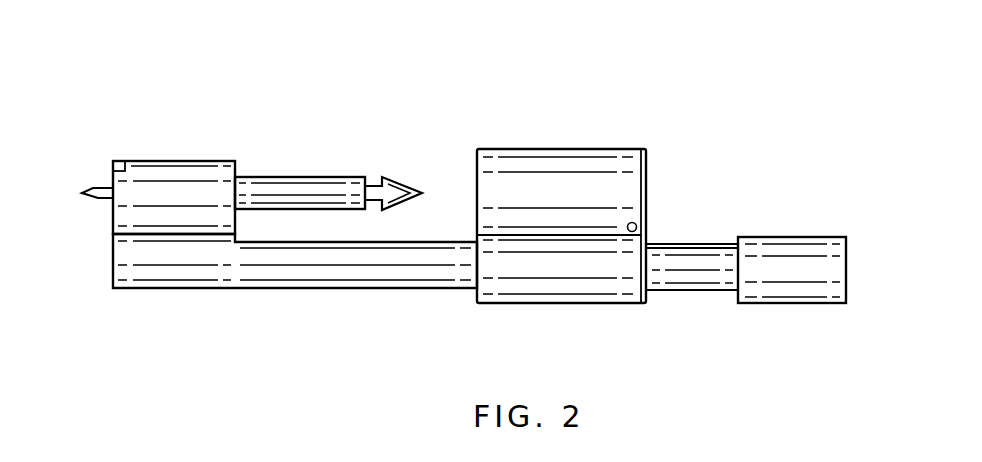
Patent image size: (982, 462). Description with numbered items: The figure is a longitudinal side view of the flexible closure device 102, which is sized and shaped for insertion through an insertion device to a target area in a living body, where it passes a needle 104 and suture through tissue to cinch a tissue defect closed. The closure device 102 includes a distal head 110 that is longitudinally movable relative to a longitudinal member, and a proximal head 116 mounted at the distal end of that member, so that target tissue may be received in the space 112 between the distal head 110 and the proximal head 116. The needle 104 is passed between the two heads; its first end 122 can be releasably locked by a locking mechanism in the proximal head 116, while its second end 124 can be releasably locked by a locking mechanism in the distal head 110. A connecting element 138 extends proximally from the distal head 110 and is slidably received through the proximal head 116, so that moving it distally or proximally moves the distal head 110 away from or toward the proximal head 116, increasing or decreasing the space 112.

The flexible closure device 102 is at (325, 133).
The needle 104 is at (280, 177).
The distal head 110 is at (188, 173).
The space 112 is at (439, 197).
The proximal head 116 is at (555, 162).
The first end of the needle 122 is at (395, 182).
The second end of the needle 124 is at (95, 187).
The connecting element 138 is at (403, 290).